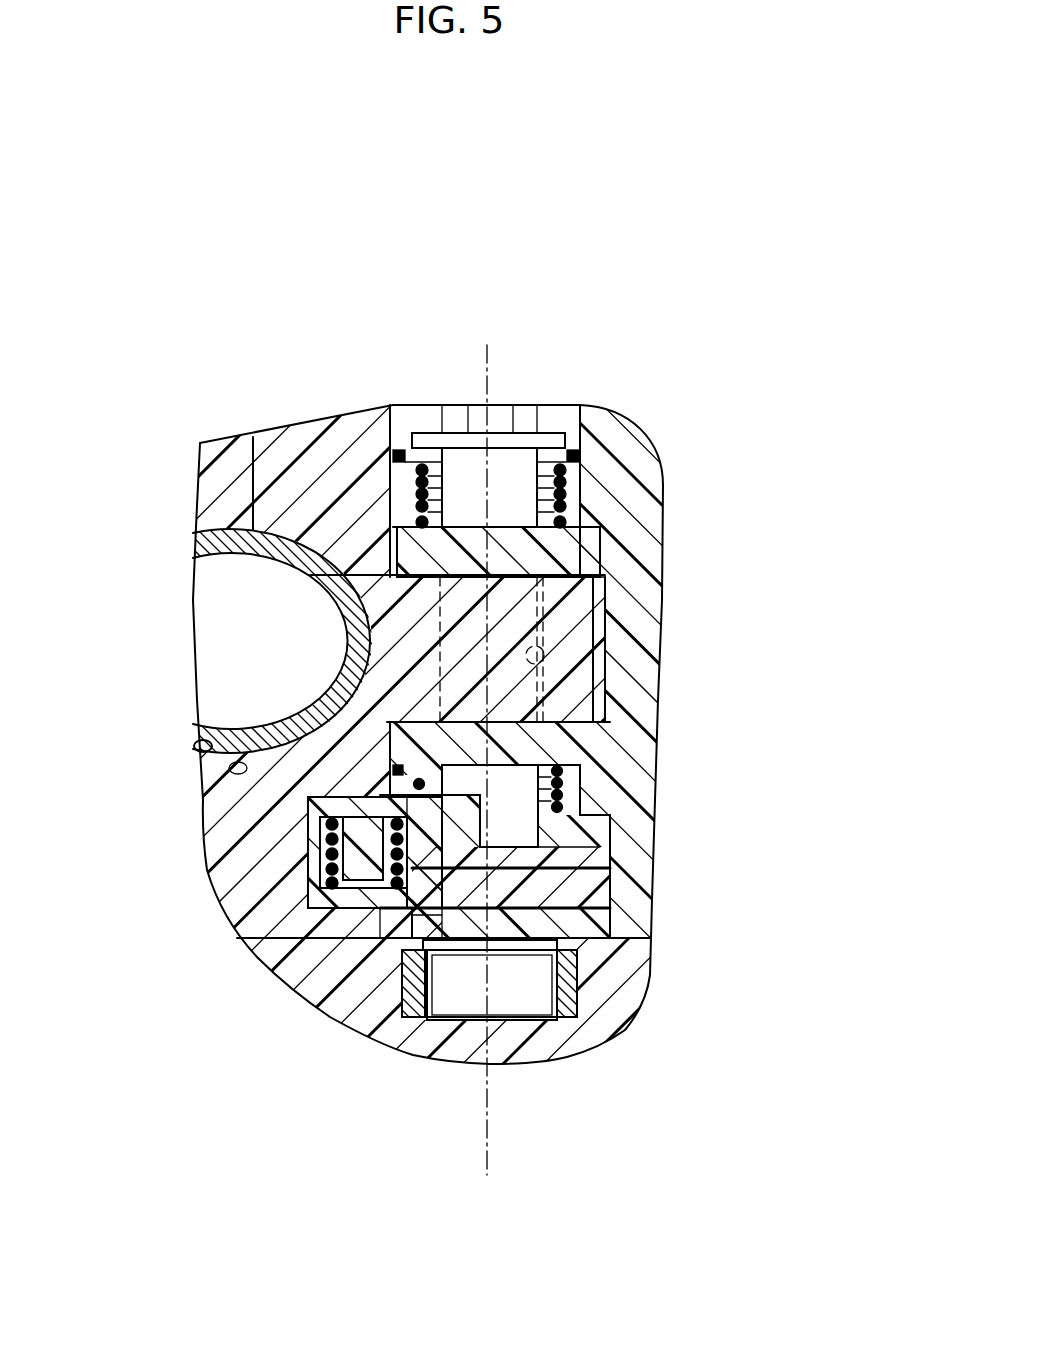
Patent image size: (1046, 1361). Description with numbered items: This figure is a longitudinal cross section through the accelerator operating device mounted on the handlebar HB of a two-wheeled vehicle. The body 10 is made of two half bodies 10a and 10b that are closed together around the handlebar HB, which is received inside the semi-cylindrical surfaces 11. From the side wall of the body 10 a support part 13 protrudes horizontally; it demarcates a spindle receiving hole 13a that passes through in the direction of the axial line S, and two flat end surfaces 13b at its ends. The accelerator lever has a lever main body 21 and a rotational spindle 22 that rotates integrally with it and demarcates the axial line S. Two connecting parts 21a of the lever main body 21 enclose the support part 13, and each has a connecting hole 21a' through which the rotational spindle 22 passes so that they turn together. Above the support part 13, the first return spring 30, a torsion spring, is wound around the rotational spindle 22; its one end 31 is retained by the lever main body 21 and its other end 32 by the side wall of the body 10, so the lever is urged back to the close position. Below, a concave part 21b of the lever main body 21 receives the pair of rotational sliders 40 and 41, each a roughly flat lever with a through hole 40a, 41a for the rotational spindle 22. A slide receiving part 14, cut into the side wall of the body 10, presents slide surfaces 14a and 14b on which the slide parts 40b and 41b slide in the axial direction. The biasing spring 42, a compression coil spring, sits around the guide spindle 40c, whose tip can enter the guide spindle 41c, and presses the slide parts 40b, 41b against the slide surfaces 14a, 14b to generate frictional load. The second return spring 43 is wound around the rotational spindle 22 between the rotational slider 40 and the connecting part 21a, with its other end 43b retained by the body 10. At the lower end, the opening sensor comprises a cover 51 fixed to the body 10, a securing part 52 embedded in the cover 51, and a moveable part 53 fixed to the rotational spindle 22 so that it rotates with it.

The body 10 is at (331, 302).
The half body 10a is at (313, 465).
The half body 10b is at (228, 470).
The semi-cylindrical surface 11 is at (193, 742).
The support part 13 is at (583, 632).
The spindle receiving hole 13a is at (544, 657).
The flat end surface 13b is at (600, 585).
The slide receiving part 14 is at (312, 855).
The slide surface 14a is at (300, 840).
The slide surface 14b is at (343, 880).
The lever main body 21 is at (600, 575).
The connecting part 21a is at (255, 633).
The connecting hole 21a' is at (608, 625).
The concave part 21b is at (580, 805).
The rotational spindle 22 is at (517, 470).
The first return spring 30 is at (575, 455).
The one end 31 is at (590, 478).
The other end 32 is at (398, 450).
The rotational slider 40 is at (580, 847).
The through hole 40a is at (565, 860).
The slide part 40b is at (305, 805).
The guide spindle 40c is at (385, 860).
The rotational slider 41 is at (583, 897).
The through hole 41a is at (560, 900).
The slide part 41b is at (355, 860).
The guide spindle 41c is at (385, 900).
The biasing spring 42 is at (325, 850).
The second return spring 43 is at (577, 790).
The other end 43b is at (393, 770).
The cover 51 is at (607, 1025).
The securing part 52 is at (580, 983).
The moveable part 53 is at (527, 1000).
The handlebar HB is at (197, 540).
The axial line S is at (487, 347).